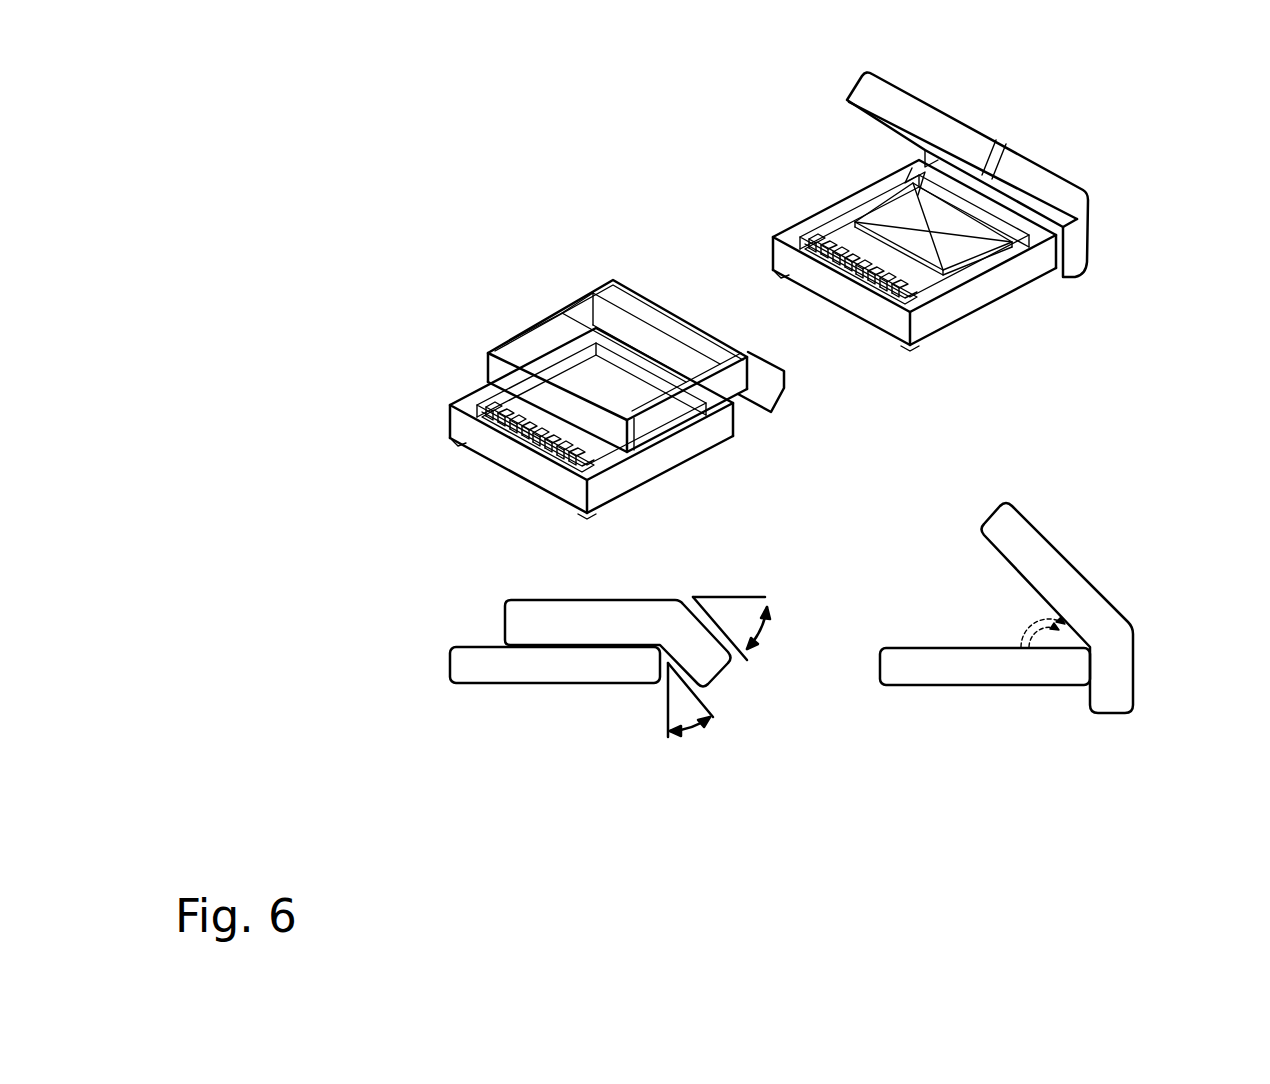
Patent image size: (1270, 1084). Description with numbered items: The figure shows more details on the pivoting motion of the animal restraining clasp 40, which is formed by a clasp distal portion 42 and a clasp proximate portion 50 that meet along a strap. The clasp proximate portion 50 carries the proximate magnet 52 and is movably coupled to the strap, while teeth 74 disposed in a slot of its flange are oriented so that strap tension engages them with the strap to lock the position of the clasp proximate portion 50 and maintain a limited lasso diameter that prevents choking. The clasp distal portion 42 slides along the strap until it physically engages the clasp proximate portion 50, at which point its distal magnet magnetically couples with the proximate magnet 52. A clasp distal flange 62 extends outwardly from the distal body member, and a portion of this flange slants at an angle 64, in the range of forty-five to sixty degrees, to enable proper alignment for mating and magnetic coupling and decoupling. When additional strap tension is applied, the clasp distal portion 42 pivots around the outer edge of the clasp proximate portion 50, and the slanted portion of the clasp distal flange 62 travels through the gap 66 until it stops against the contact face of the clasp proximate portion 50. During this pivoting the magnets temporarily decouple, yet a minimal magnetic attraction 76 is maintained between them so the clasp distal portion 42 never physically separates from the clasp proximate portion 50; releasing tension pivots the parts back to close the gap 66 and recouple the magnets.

The animal restraining clasp 40 is at (352, 335).
The clasp distal portion 42 is at (752, 389).
The clasp proximate portion 50 is at (808, 505).
The proximate magnet 52 is at (856, 185).
The clasp distal flange 62 is at (580, 216).
The angle 64 is at (792, 699).
The gap 66 is at (747, 760).
The teeth 74 is at (699, 353).
The minimal magnetic attraction 76 is at (971, 603).